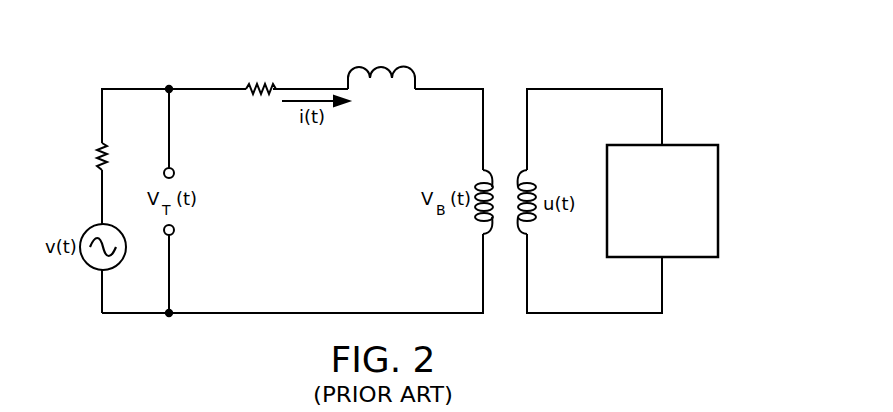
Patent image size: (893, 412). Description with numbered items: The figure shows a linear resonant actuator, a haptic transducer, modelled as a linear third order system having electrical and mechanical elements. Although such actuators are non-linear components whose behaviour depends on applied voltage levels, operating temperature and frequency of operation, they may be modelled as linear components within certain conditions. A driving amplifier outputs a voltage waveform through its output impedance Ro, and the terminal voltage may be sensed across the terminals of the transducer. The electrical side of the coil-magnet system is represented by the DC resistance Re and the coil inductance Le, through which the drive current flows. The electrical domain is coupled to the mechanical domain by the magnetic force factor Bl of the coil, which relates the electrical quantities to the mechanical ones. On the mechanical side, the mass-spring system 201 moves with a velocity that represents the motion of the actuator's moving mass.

The mass-spring system 201 is at (718, 200).
The output impedance Ro is at (86, 156).
The DC resistance Re is at (260, 76).
The coil inductance Le is at (381, 67).
The magnetic force factor Bl is at (505, 150).